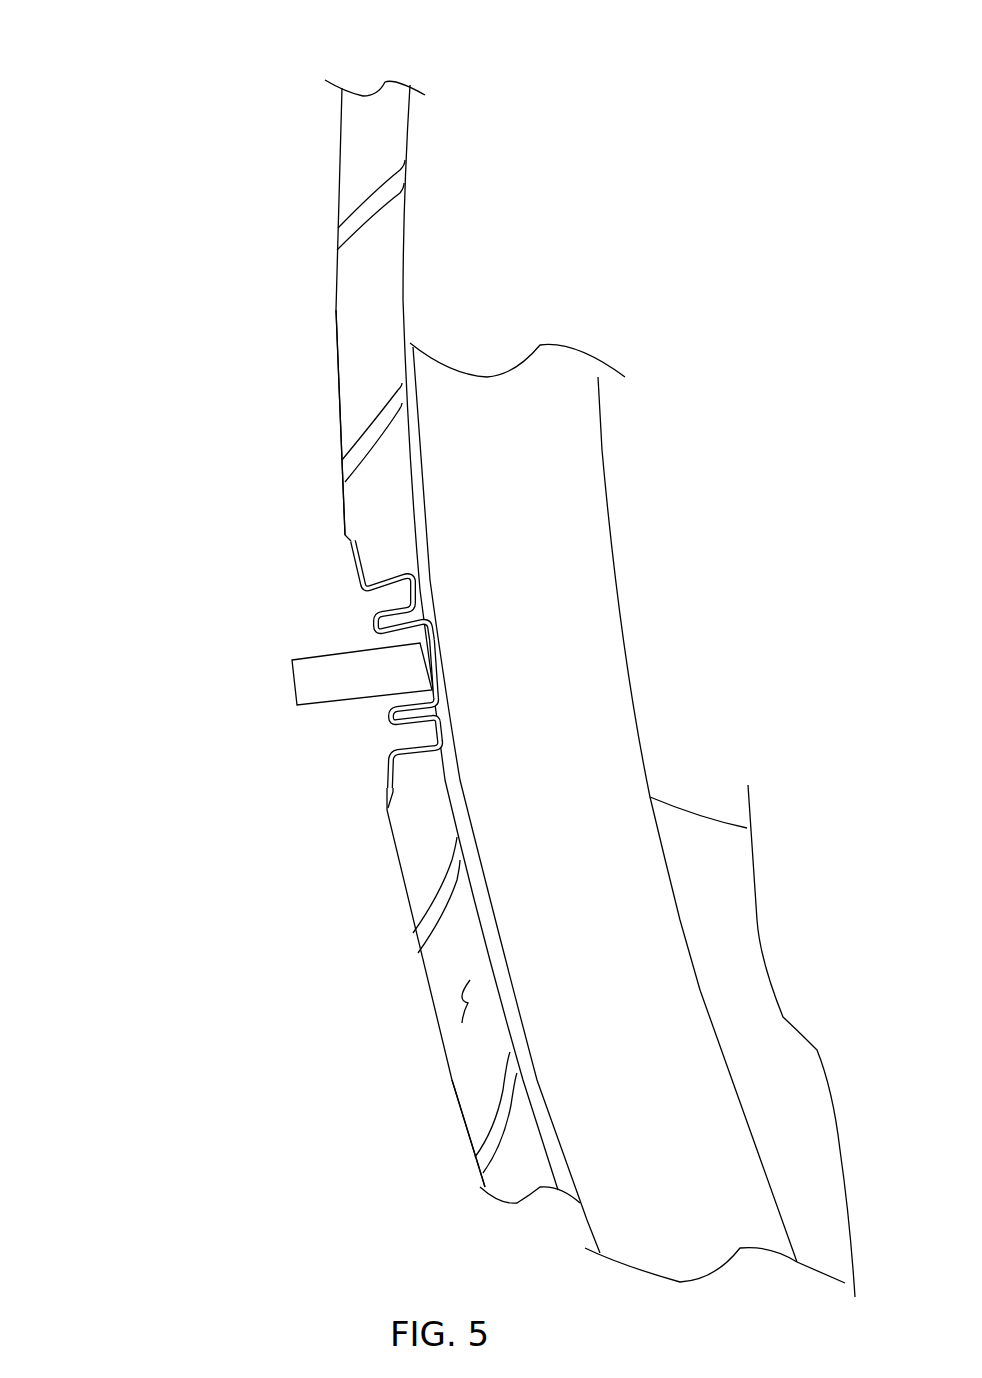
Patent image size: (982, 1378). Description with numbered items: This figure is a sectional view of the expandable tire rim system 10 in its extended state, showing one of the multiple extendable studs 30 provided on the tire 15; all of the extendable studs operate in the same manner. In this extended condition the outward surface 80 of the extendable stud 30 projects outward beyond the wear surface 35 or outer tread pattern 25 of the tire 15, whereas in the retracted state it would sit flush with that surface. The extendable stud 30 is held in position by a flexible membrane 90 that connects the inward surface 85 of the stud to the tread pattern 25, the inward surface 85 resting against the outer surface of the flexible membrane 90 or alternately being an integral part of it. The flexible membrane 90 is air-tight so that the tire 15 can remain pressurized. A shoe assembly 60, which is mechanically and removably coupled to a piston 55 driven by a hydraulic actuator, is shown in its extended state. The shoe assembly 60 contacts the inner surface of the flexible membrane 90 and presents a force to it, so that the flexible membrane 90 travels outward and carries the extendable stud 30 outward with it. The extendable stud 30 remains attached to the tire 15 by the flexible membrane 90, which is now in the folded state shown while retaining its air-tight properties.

The expandable tire rim system 10 is at (100, 182).
The tire 15 is at (468, 1007).
The outer tread pattern 25 is at (352, 308).
The extendable stud 30 is at (306, 735).
The wear surface 35 is at (337, 378).
The piston 55 is at (713, 880).
The shoe assembly 60 is at (553, 515).
The outward surface 80 is at (294, 682).
The inward surface 85 is at (420, 664).
The flexible membrane 90 is at (376, 613).